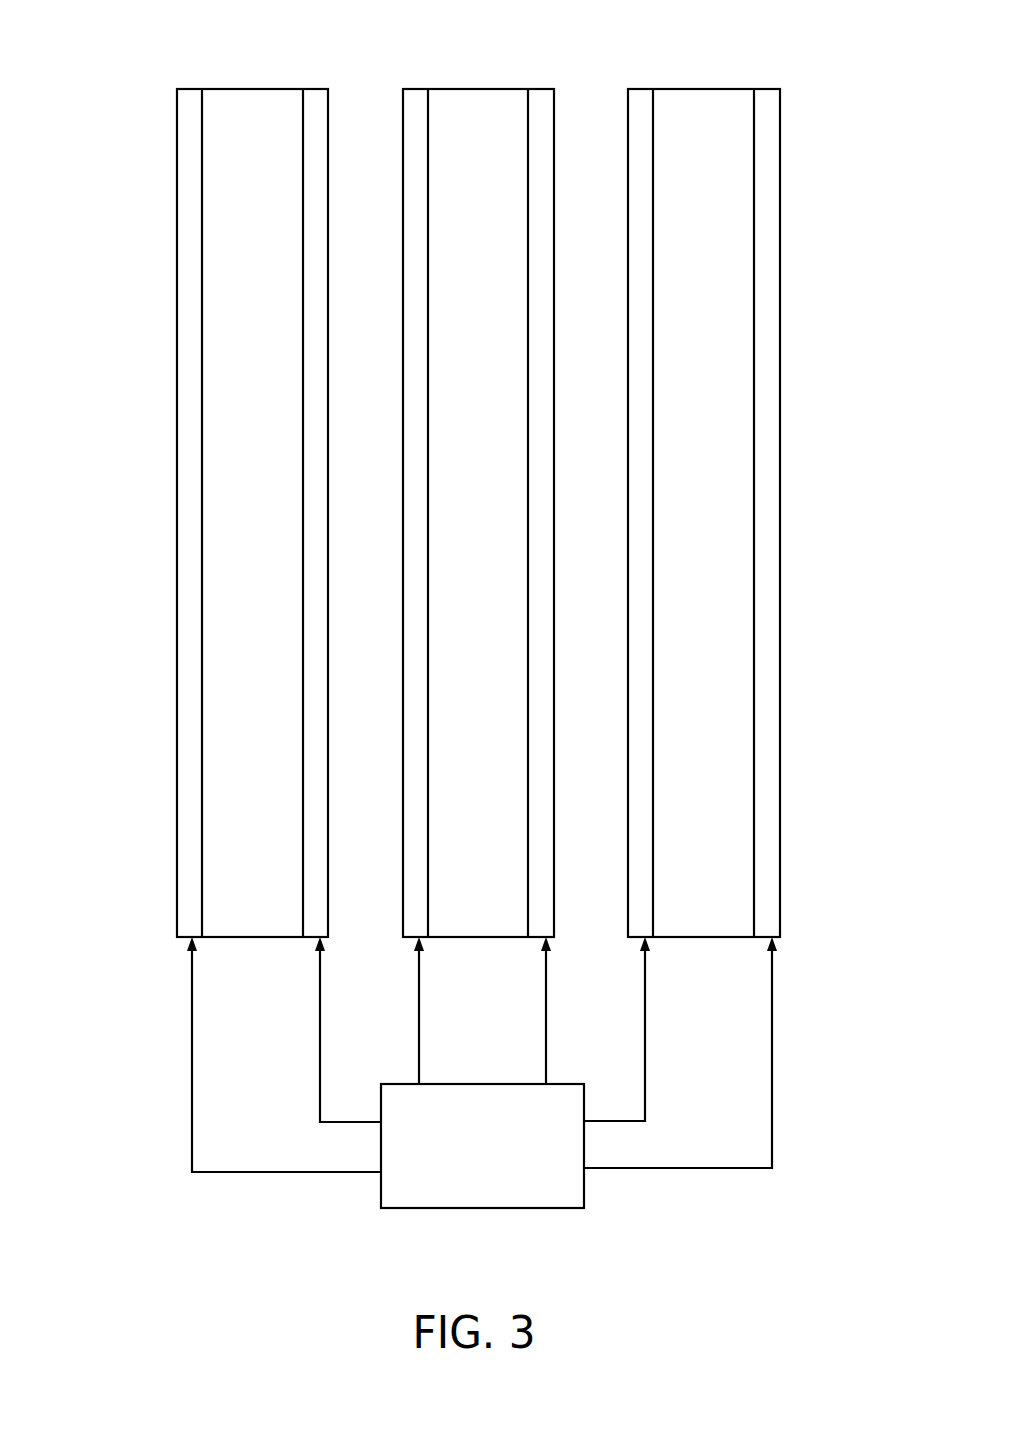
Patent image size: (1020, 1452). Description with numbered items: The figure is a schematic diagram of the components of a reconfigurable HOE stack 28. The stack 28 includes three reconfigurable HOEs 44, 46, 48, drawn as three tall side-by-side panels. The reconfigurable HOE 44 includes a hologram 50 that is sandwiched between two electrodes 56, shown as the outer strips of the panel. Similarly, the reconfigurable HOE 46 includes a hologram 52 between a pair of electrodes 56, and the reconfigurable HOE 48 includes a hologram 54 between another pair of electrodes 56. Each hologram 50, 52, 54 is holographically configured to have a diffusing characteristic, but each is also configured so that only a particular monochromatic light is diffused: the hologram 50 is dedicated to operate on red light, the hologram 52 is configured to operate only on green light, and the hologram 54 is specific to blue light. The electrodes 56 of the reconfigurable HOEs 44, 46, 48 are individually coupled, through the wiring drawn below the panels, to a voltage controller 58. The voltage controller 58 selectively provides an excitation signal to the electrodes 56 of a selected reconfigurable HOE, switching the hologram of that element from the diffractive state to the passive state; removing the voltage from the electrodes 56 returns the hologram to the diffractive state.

The reconfigurable HOE stack 28 is at (88, 201).
The reconfigurable HOE 44 is at (177, 65).
The reconfigurable HOE 46 is at (555, 65).
The reconfigurable HOE 48 is at (780, 65).
The hologram 50 is at (227, 660).
The hologram 52 is at (496, 635).
The hologram 54 is at (733, 600).
The electrodes 56 is at (318, 298).
The voltage controller 58 is at (537, 1210).